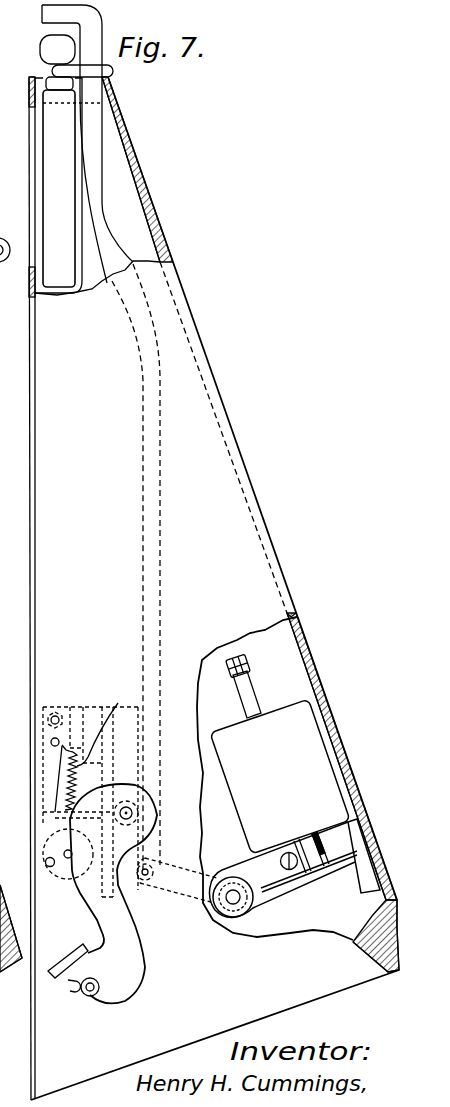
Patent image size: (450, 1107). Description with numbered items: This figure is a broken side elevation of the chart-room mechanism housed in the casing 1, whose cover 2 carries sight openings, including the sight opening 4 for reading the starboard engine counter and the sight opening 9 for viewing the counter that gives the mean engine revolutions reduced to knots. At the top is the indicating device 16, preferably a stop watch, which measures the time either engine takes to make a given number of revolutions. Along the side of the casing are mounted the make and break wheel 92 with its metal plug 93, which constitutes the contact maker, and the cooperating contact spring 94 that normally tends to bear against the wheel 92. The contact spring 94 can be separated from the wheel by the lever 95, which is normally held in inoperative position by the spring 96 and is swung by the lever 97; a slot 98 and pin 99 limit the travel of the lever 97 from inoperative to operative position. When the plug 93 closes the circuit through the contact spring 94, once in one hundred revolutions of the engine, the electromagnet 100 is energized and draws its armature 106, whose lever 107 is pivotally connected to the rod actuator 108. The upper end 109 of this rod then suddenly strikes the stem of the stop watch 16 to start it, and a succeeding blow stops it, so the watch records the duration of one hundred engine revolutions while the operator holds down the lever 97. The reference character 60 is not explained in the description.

The casing 1 is at (218, 593).
The cover 2 is at (32, 452).
The sight opening 4 is at (5, 270).
The sight opening 9 is at (11, 863).
The indicating device 16 is at (55, 138).
The casing wall 60 is at (250, 524).
The make and break wheel 92 is at (75, 880).
The metal plug 93 is at (50, 867).
The contact spring 94 is at (43, 830).
The lever 95 is at (68, 808).
The spring 96 is at (98, 728).
The lever 97 is at (138, 957).
The slot 98 is at (72, 992).
The pin 99 is at (94, 996).
The electromagnet 100 is at (280, 754).
The armature 106 is at (338, 888).
The lever 107 is at (175, 893).
The rod actuator 108 is at (163, 537).
The upper end 109 is at (43, 17).